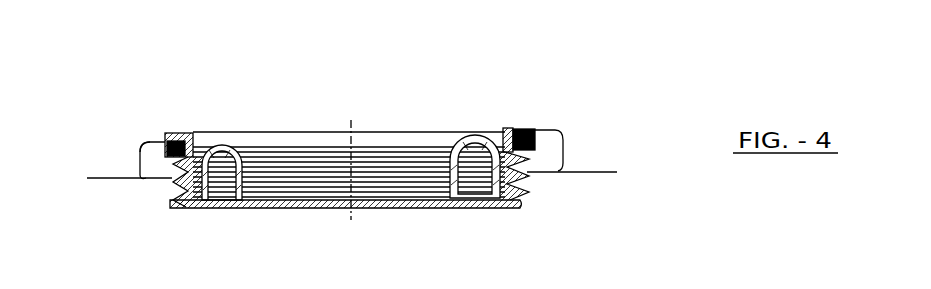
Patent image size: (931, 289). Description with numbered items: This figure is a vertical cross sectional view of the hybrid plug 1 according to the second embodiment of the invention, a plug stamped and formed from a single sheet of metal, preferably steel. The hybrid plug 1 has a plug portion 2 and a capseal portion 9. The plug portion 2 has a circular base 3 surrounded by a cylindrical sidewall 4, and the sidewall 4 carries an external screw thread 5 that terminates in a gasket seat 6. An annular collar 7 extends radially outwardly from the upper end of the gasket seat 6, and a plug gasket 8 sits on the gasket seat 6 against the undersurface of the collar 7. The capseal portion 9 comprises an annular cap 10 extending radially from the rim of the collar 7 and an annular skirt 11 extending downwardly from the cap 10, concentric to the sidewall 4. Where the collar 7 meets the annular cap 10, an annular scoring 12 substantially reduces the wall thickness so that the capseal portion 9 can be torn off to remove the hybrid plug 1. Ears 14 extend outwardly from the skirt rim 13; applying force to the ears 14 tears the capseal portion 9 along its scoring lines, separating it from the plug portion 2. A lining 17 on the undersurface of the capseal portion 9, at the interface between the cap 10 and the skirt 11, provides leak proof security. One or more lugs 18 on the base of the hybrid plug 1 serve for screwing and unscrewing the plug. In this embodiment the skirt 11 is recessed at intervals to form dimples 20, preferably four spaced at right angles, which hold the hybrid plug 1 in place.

The hybrid plug 1 is at (349, 105).
The plug portion 2 is at (349, 205).
The circular base 3 is at (345, 223).
The cylindrical sidewall 4 is at (125, 215).
The external screw thread 5 is at (571, 192).
The gasket seat 6 is at (470, 100).
The annular collar 7 is at (540, 88).
The plug gasket 8 is at (106, 134).
The capseal portion 9 is at (113, 159).
The annular cap 10 is at (135, 118).
The annular skirt 11 is at (616, 118).
The annular scoring 12 is at (148, 105).
The skirt rim 13 is at (104, 202).
The ears 14 is at (610, 153).
The lining 17 is at (589, 92).
The lugs 18 is at (188, 207).
The dimples 20 is at (622, 137).